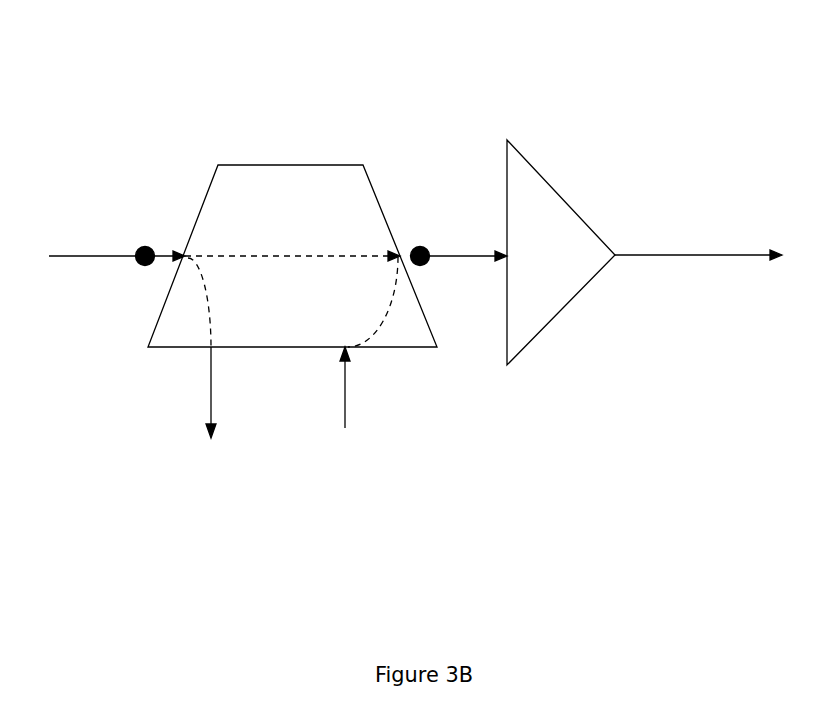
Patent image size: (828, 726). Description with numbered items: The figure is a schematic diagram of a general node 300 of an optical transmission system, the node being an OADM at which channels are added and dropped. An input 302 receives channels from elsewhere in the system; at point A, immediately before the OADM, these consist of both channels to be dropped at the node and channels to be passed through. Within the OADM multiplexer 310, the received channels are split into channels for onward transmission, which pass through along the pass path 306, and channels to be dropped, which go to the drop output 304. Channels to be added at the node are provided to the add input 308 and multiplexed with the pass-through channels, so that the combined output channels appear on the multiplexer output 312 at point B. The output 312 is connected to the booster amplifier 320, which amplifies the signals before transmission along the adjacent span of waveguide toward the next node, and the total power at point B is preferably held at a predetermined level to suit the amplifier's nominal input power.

The node 300 is at (537, 102).
The input 302 is at (125, 252).
The drop output 304 is at (194, 348).
The pass path 306 is at (235, 263).
The add input 308 is at (361, 360).
The OADM multiplexer 310 is at (256, 195).
The multiplexer output 312 is at (458, 267).
The booster amplifier 320 is at (555, 233).